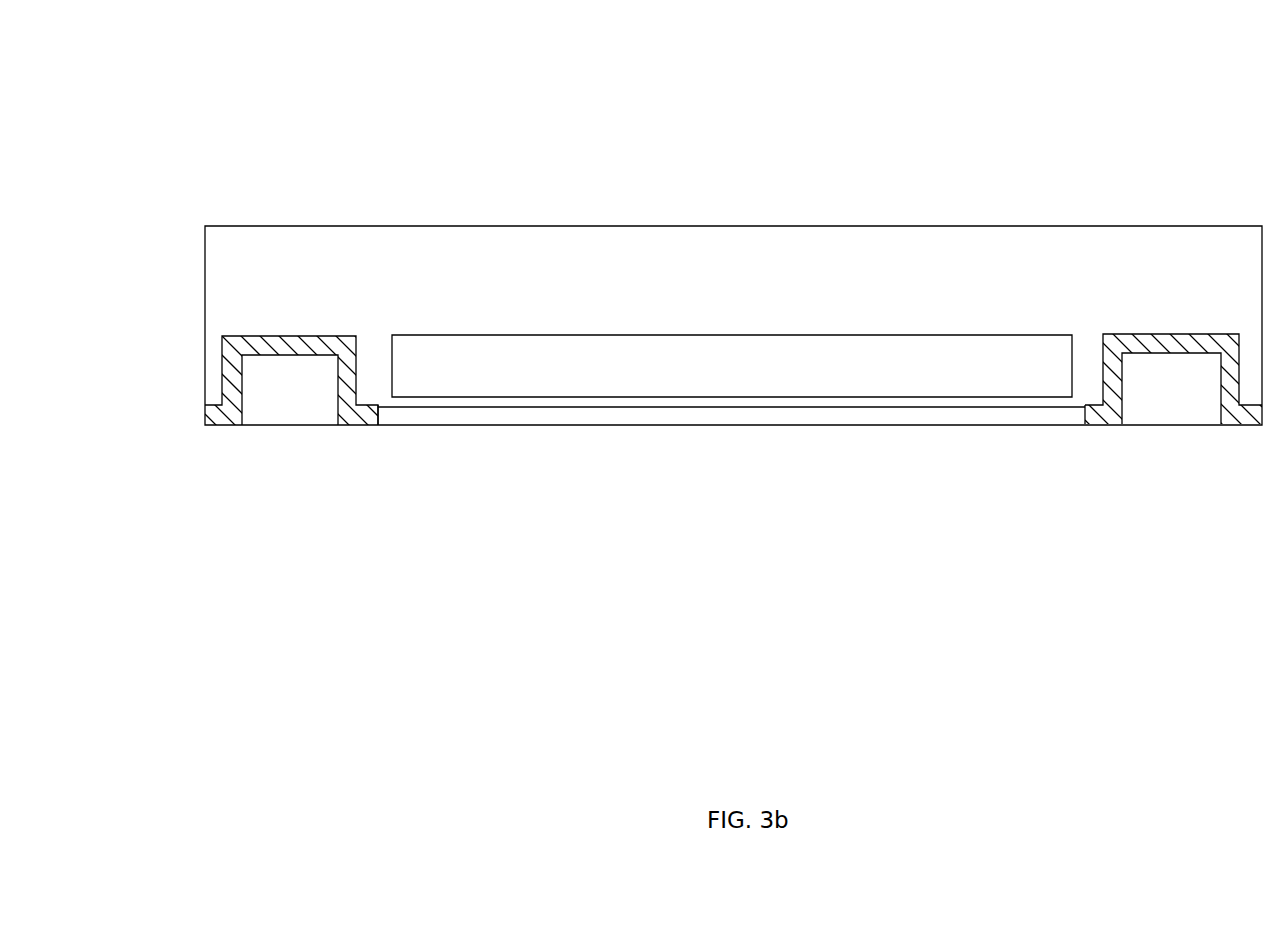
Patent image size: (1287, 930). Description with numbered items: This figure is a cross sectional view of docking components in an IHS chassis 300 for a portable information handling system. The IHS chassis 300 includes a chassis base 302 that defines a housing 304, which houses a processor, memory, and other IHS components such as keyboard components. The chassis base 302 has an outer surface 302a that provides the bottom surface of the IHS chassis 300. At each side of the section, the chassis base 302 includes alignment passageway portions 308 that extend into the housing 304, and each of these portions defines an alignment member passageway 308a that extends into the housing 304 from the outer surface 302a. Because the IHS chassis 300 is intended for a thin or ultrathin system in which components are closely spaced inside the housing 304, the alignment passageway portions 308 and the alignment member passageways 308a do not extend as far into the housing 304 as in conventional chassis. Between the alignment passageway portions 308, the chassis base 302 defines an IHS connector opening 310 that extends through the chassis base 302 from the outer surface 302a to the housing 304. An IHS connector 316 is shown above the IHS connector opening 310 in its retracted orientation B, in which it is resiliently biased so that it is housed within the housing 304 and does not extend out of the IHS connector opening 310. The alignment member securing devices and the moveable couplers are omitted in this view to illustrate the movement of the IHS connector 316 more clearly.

The IHS chassis 300 is at (287, 102).
The chassis base 302 is at (320, 226).
The outer surface 302a is at (440, 427).
The housing 304 is at (766, 274).
The alignment passageway portions 308 is at (292, 335).
The alignment member passageway 308a is at (289, 398).
The IHS connector opening 310 is at (813, 415).
The IHS connector 316 is at (750, 381).
The retracted orientation B is at (643, 305).